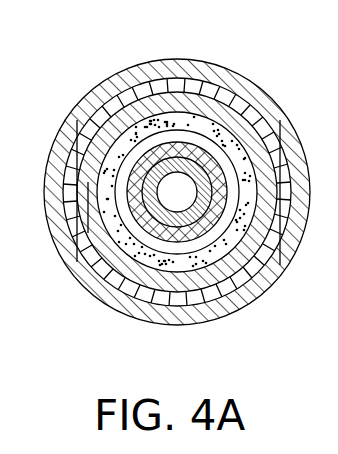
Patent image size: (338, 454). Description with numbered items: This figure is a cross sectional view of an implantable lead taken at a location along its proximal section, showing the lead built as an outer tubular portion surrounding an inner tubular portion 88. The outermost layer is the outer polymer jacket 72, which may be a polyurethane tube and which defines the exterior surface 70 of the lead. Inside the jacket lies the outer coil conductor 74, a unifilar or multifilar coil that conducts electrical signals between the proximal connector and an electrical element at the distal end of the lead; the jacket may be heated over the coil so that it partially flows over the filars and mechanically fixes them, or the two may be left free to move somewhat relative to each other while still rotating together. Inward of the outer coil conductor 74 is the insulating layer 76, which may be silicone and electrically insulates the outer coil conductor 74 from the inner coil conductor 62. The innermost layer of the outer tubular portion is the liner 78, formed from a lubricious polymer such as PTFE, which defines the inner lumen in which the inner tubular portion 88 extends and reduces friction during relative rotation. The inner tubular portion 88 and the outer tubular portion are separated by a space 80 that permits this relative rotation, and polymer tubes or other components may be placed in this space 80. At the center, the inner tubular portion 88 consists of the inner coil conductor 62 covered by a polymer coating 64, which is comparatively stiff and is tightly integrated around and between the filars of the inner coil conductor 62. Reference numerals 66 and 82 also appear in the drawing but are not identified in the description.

The inner coil conductor 62 is at (212, 199).
The polymer coating 64 is at (191, 233).
The layer 66 is at (335, 85).
The exterior surface 70 is at (117, 67).
The outer polymer jacket 72 is at (210, 76).
The outer coil conductor 74 is at (88, 182).
The insulating layer 76 is at (261, 112).
The liner 78 is at (84, 195).
The space 80 is at (138, 237).
The layer 82 is at (332, 196).
The inner tubular portion 88 is at (168, 192).